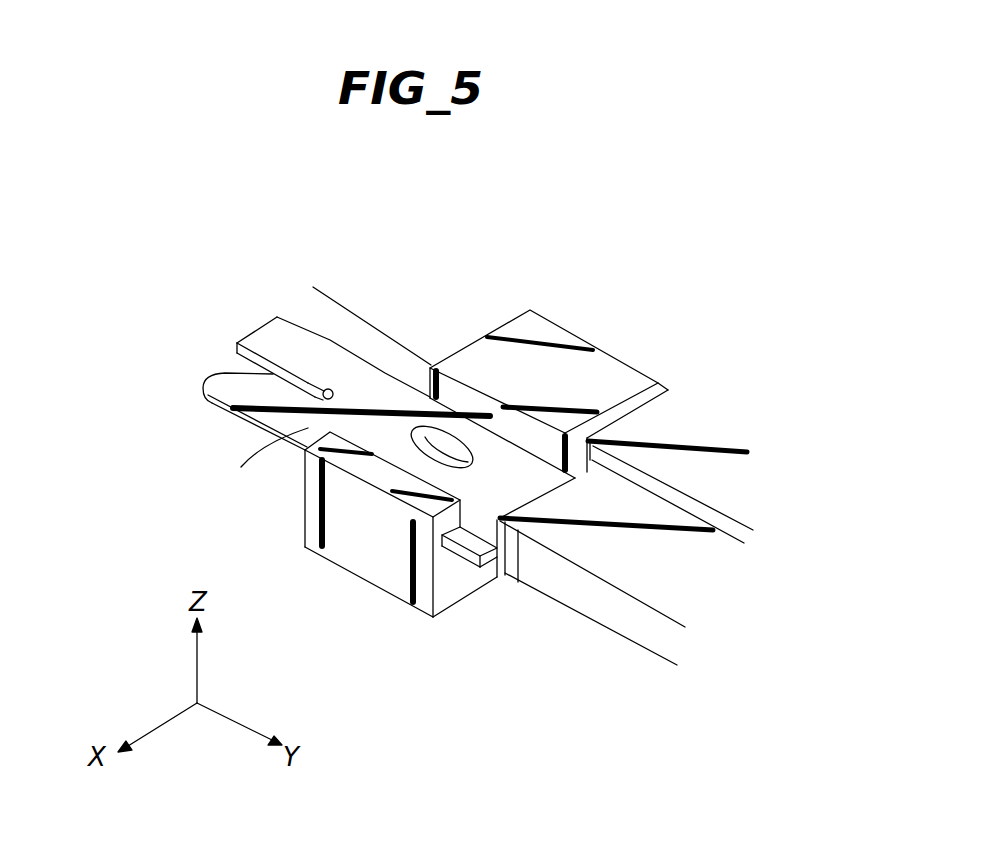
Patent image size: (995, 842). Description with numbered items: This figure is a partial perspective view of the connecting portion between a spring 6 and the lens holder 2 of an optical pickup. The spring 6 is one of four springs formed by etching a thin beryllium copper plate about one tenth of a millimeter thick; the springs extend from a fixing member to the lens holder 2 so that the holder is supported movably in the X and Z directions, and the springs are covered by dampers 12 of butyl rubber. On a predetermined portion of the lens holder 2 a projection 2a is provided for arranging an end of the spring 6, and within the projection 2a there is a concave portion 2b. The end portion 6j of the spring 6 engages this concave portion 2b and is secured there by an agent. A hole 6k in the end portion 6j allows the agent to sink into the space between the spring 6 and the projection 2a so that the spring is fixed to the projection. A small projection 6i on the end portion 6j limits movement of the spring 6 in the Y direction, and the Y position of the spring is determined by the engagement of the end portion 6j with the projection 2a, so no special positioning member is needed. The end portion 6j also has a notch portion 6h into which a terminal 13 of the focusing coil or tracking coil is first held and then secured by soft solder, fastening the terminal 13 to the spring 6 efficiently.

The lens holder 2 is at (673, 410).
The projection 2a is at (367, 565).
The concave portion 2b is at (473, 408).
The spring 6 is at (580, 625).
The notch portion 6h is at (300, 373).
The small projection 6i is at (473, 547).
The end portion of spring 6j is at (408, 453).
The hole 6k is at (460, 462).
The damper 12 is at (652, 630).
The terminal 13 is at (271, 458).